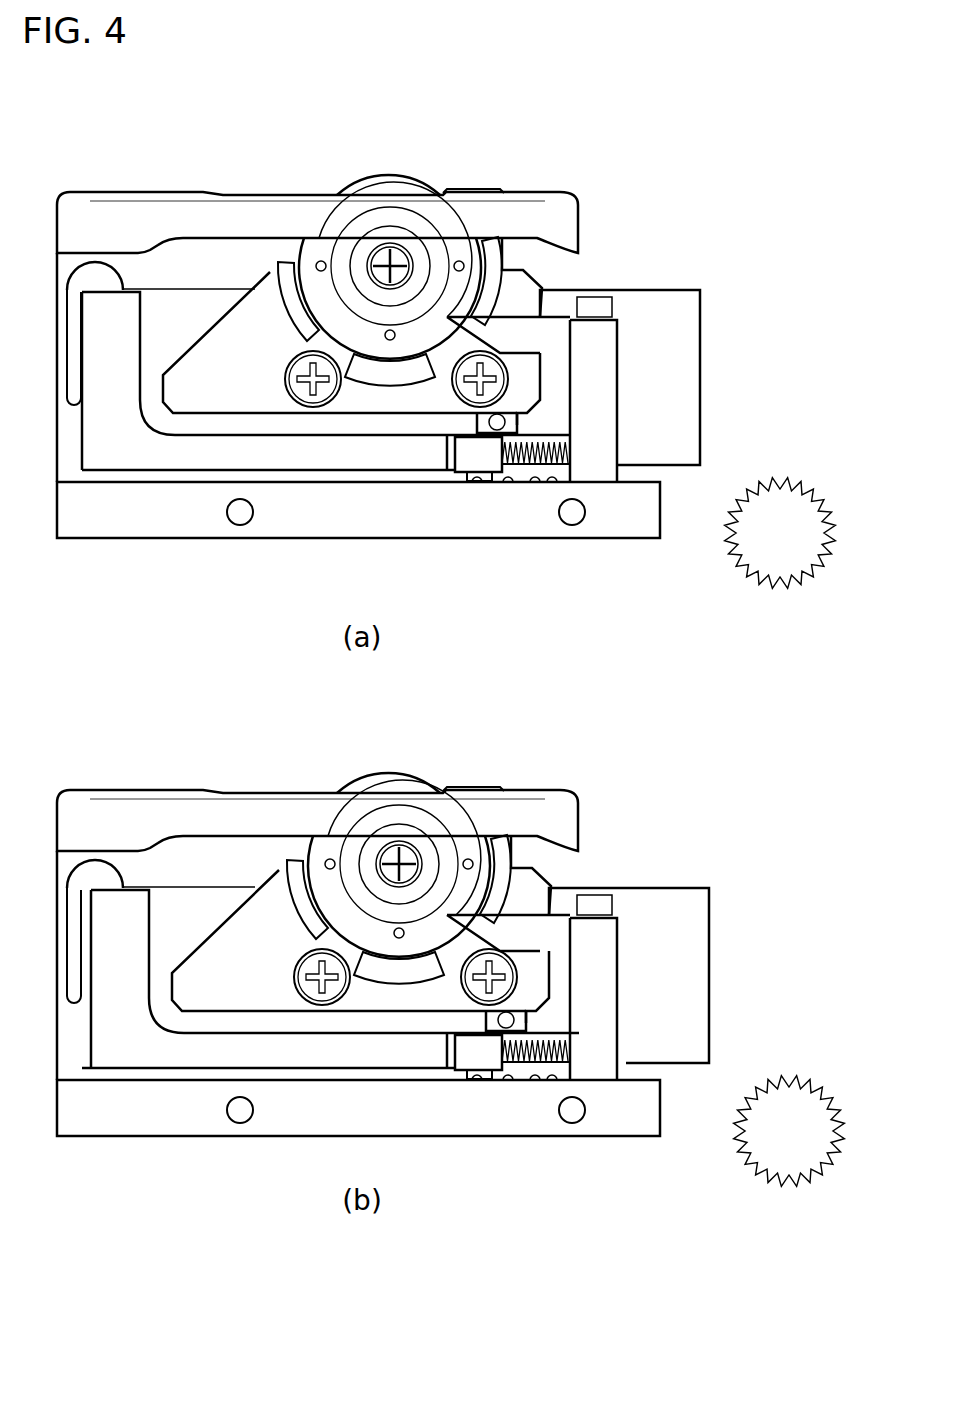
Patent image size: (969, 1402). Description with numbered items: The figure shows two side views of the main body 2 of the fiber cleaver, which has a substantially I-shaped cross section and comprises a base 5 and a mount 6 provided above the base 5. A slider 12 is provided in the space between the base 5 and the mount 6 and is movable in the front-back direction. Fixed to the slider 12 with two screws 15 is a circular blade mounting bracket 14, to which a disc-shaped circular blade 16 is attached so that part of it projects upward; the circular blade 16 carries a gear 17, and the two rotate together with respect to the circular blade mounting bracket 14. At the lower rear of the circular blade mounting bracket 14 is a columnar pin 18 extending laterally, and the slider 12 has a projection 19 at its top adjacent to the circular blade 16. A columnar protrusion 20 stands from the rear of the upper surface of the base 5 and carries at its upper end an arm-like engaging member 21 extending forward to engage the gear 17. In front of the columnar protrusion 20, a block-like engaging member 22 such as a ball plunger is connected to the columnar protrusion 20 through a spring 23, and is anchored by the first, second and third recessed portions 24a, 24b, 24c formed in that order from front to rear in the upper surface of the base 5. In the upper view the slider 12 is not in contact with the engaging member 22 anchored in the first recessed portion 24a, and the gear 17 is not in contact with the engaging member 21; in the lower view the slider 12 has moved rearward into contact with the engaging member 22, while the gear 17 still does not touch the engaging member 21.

The main body 2 is at (176, 186).
The base 5 is at (108, 520).
The mount 6 is at (89, 205).
The slider 12 is at (680, 337).
The circular blade mounting bracket 14 is at (190, 400).
The screws 15 is at (320, 392).
The circular blade 16 is at (389, 184).
The gear 17 is at (323, 262).
The pin 18 is at (500, 422).
The projection 19 is at (478, 189).
The columnar protrusion 20 is at (612, 340).
The engaging member 21 is at (546, 330).
The engaging member 22 is at (498, 462).
The spring 23 is at (573, 455).
The first recessed portion 24a is at (477, 482).
The second recessed portion 24b is at (510, 483).
The third recessed portion 24c is at (535, 483).